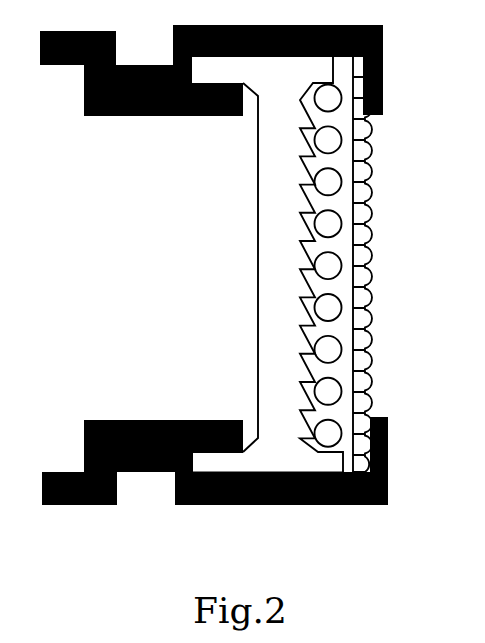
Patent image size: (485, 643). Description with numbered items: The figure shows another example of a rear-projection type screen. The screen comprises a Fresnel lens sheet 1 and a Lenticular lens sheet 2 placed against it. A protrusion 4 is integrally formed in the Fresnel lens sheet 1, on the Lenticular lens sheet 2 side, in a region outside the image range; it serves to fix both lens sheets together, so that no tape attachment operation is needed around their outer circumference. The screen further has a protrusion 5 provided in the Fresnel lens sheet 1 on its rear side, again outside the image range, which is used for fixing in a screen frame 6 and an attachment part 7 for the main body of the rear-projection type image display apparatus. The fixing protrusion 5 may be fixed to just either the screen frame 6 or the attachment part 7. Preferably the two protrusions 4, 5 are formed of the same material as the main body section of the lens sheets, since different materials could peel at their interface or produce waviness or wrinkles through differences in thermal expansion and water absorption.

The Fresnel lens sheet 1 is at (260, 183).
The Lenticular lens sheet 2 is at (350, 220).
The protrusion 4 is at (323, 463).
The protrusion 5 is at (260, 503).
The screen frame 6 is at (390, 490).
The attachment part 7 is at (87, 505).